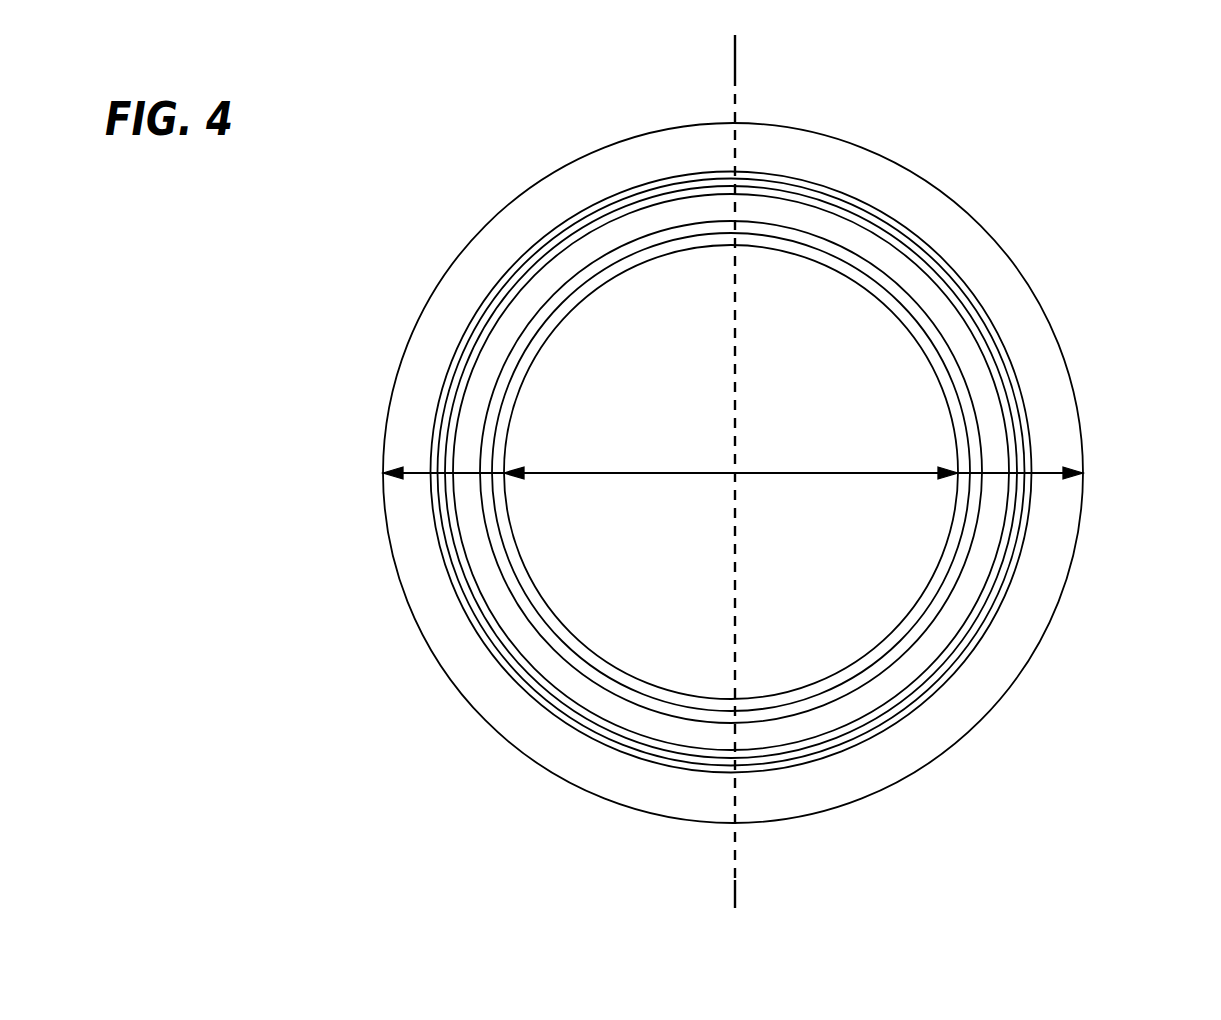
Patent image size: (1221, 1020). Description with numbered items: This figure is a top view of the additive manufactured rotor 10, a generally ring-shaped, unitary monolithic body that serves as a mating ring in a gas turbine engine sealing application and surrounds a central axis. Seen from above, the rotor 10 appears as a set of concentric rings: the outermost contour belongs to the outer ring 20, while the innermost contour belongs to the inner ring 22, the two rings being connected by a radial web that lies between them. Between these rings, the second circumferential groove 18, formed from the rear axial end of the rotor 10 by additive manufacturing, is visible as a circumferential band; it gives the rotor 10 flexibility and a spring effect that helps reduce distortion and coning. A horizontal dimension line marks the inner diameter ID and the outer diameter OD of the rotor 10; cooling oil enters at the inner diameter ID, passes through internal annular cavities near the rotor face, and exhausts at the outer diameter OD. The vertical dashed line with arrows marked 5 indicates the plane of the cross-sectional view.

The rotor 10 is at (793, 441).
The outer ring 20 is at (993, 253).
The second circumferential groove 18 is at (1030, 438).
The inner ring 22 is at (938, 308).
The section line 5- 5 is at (735, 35).
The inner diameter ID is at (817, 474).
The outer diameter OD is at (412, 475).